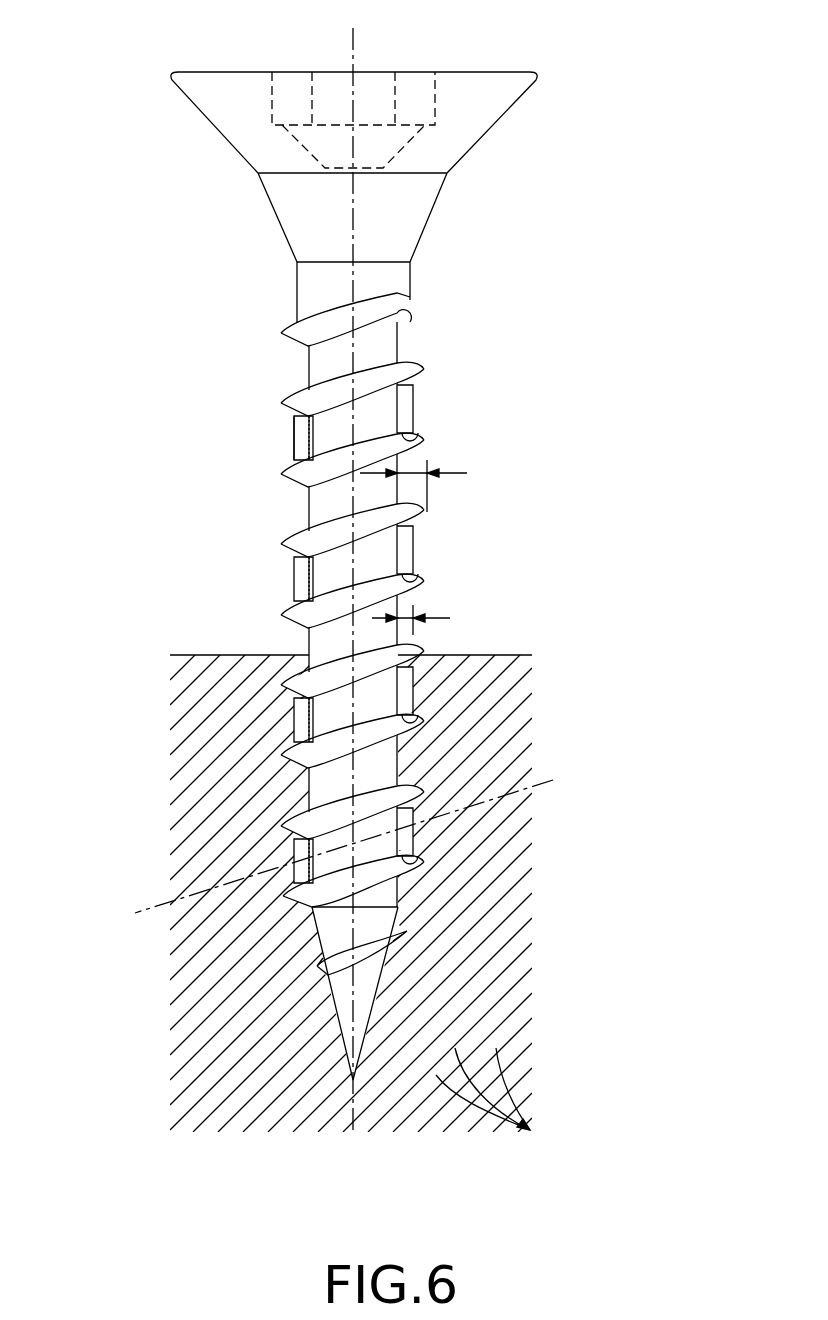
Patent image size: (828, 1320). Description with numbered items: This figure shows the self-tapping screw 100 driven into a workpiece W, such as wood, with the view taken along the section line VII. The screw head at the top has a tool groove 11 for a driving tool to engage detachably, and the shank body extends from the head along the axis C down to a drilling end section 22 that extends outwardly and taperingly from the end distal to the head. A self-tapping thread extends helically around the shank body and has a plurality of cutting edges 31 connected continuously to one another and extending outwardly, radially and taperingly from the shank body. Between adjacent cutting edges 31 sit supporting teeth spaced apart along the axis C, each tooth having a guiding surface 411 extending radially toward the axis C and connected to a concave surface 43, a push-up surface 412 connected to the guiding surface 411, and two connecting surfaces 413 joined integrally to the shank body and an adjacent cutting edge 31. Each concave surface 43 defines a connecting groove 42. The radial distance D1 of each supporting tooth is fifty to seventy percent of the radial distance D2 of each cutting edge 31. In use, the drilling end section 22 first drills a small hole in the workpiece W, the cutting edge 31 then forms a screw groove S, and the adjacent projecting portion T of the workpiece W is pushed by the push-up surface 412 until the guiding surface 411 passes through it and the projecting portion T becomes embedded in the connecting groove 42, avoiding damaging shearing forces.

The self-tapping screw 100 is at (569, 67).
The tool groove 11 is at (412, 83).
The cutting edges 31 is at (422, 366).
The concave surfaces 43 is at (309, 432).
The connecting groove 42 is at (313, 452).
The guiding surface 411 is at (300, 577).
The push-up surface 412 is at (410, 838).
The connecting surfaces 413 is at (426, 437).
The drilling end section 22 is at (345, 1048).
The axis C is at (351, 565).
The workpiece W is at (158, 1053).
The projecting portion T is at (293, 722).
The screw groove S is at (298, 805).
The radial distance of supporting tooth D1 is at (430, 620).
The radial distance of cutting edge D2 is at (435, 486).
The section line VII- VII is at (552, 780).